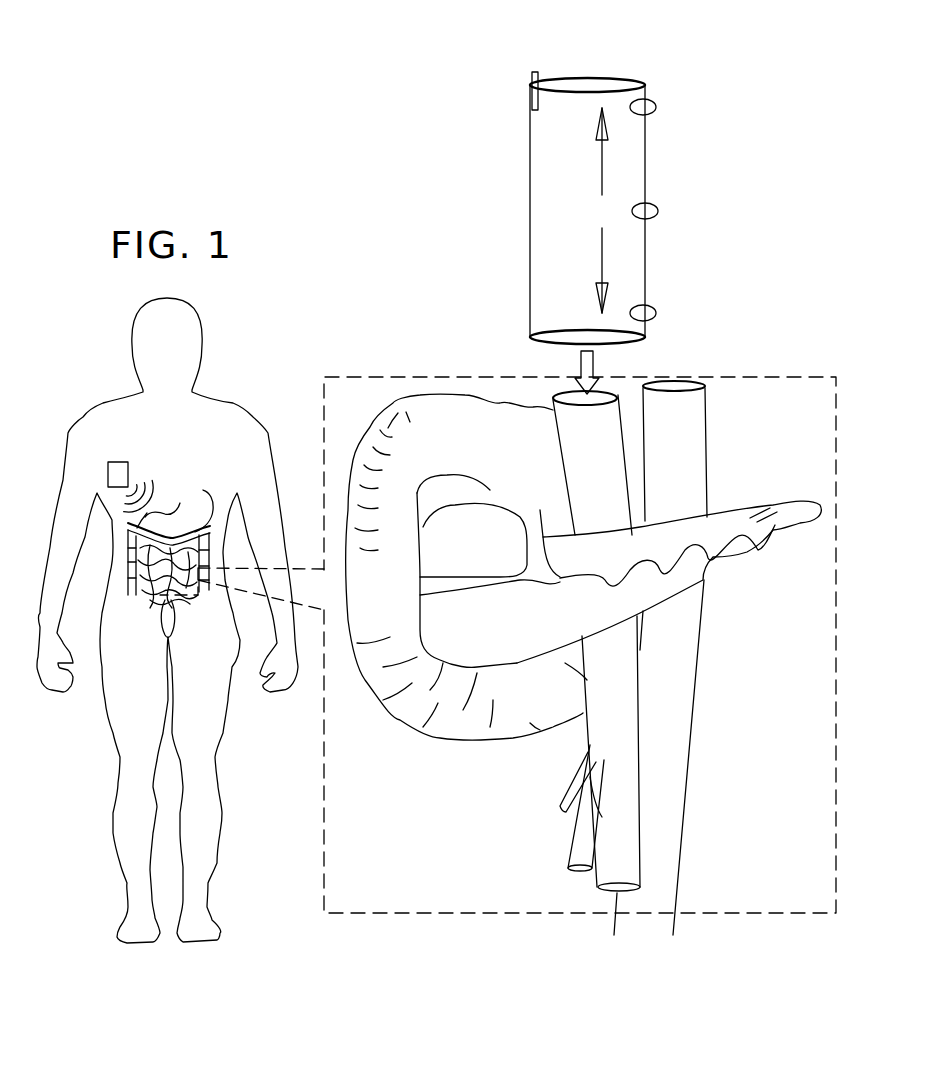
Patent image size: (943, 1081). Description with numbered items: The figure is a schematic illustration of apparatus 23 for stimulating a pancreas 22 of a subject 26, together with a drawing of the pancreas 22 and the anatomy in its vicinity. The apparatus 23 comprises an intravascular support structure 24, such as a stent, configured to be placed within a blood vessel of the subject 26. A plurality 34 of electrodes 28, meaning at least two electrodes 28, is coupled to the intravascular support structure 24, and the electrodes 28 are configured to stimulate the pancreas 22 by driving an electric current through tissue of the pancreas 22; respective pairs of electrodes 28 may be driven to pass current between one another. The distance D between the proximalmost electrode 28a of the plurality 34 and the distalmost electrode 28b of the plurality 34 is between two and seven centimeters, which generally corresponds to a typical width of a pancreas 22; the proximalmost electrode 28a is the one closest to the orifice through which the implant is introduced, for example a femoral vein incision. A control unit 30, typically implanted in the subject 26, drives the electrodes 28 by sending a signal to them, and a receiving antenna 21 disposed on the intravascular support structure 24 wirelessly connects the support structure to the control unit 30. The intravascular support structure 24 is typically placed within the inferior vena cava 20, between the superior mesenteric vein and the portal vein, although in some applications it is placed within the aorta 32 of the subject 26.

The inferior vena cava 20 is at (577, 827).
The receiving antenna 21 is at (530, 97).
The pancreas 22 is at (763, 550).
The apparatus 23 is at (619, 177).
The intravascular support structure 24 is at (530, 208).
The subject 26 is at (217, 333).
The electrode 28 is at (651, 206).
The proximalmost electrode 28a is at (671, 296).
The distalmost electrode 28b is at (650, 100).
The control unit 30 is at (128, 465).
The aorta 32 is at (673, 827).
The plurality of electrodes 34 is at (692, 192).